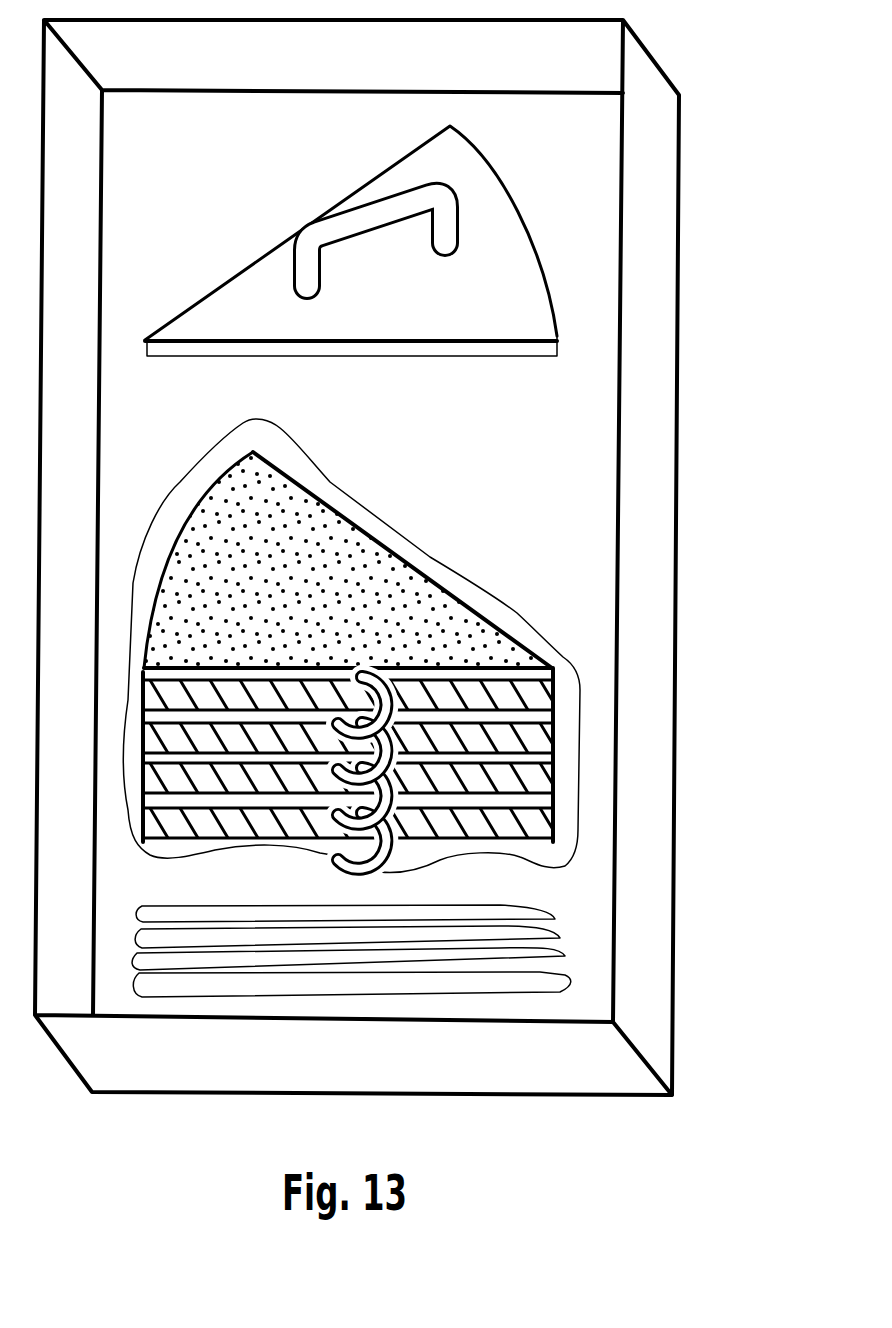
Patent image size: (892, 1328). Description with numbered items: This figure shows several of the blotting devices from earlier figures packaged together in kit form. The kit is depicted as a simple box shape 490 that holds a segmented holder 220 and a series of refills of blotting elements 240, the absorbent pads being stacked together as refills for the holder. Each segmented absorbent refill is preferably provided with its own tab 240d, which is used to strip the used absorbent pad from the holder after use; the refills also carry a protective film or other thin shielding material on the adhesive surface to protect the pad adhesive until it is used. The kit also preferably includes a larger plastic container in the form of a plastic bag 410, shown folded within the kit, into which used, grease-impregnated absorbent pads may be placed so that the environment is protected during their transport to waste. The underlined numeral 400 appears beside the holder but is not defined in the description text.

The box 490 is at (659, 117).
The wedge-shaped food item with handle 400 is at (362, 241).
The segmented holder 220 is at (237, 297).
The blotting elements 240 is at (293, 460).
The tab 240d is at (357, 848).
The plastic bag 410 is at (243, 920).